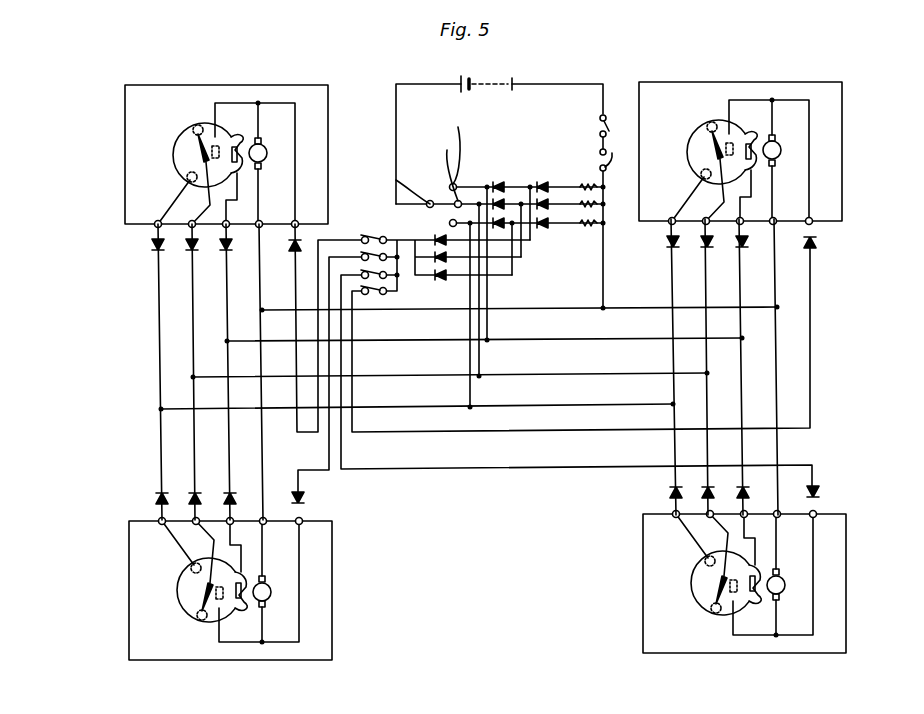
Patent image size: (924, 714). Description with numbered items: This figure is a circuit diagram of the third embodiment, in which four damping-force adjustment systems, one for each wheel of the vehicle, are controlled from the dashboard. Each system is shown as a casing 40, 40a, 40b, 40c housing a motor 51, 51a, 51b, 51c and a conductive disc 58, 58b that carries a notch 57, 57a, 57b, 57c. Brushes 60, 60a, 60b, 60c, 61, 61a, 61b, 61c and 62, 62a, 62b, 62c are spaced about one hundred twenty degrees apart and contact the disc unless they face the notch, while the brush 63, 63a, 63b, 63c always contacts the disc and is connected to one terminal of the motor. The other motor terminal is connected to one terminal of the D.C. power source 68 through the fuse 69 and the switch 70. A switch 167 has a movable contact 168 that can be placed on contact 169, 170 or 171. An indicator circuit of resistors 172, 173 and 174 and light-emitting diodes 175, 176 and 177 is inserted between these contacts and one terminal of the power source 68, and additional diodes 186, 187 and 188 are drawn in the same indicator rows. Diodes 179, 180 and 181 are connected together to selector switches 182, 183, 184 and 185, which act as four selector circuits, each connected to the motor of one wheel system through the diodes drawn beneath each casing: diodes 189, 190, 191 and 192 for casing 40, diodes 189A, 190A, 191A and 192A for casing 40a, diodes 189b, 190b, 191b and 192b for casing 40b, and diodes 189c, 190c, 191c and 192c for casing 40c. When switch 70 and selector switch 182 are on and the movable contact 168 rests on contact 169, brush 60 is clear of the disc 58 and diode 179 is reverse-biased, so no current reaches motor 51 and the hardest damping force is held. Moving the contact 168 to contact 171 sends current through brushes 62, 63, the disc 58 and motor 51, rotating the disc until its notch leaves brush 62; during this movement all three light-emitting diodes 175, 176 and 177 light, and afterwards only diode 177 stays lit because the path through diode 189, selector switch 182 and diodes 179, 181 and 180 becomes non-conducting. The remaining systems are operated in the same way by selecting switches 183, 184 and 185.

The casing 40 is at (843, 167).
The seat adjusting unit 40a is at (643, 615).
The seat adjusting unit 40b is at (126, 86).
The seat adjusting unit 40c is at (335, 637).
The motor 51 is at (783, 151).
The motor 51a is at (789, 583).
The motor 51b is at (267, 151).
The motor 51c is at (274, 592).
The notch 57 is at (753, 136).
The contact arm 57a is at (758, 598).
The contact arm 57b is at (244, 137).
The contact arm 57c is at (243, 602).
The conductive disc 58 is at (696, 140).
The position sensor dial 58b is at (186, 146).
The brush 60 is at (751, 159).
The resistor 60a is at (760, 576).
The resistor 60b is at (238, 161).
The resistor 60c is at (247, 582).
The brush 61 is at (703, 172).
The contact 61a is at (700, 560).
The contact 61b is at (187, 176).
The contact 61c is at (190, 577).
The brush 62 is at (710, 123).
The contact 62a is at (707, 605).
The contact 62b is at (197, 125).
The contact 62c is at (195, 613).
The brush 63 is at (729, 143).
The contact 63a is at (722, 618).
The contact 63b is at (216, 145).
The contact 63c is at (214, 621).
The D.C. power source 68 is at (503, 84).
The fuse 69 is at (617, 153).
The switch 70 is at (601, 117).
The switch 167 is at (435, 190).
The movable contact 168 is at (395, 160).
The contact 169 is at (452, 145).
The contact 170 is at (449, 223).
The contact 171 is at (437, 165).
The resistor 172 is at (583, 184).
The resistor 173 is at (600, 222).
The resistor 174 is at (592, 199).
The light-emitting diode 175 is at (545, 184).
The light-emitting diode 176 is at (546, 222).
The light-emitting diode 177 is at (553, 200).
The diode 179 is at (360, 272).
The diode 180 is at (447, 280).
The diode 181 is at (436, 262).
The selector switch 182 is at (371, 294).
The selector switch 183 is at (362, 291).
The selector switch 184 is at (360, 237).
The selector switch 185 is at (360, 254).
The diode 186 is at (497, 184).
The diode 187 is at (503, 200).
The diode 188 is at (508, 215).
The diode 189 is at (814, 243).
The diode 189A is at (818, 493).
The diode 189b is at (286, 247).
The diode 189c is at (305, 498).
The diode 190 is at (745, 243).
The diode 190A is at (752, 490).
The diode 190b is at (220, 247).
The diode 190c is at (225, 490).
The diode 191 is at (711, 243).
The diode 191A is at (702, 491).
The diode 191b is at (185, 247).
The diode 191c is at (190, 490).
The diode 192 is at (667, 246).
The diode 192A is at (670, 492).
The diode 192b is at (150, 246).
The diode 192c is at (158, 493).